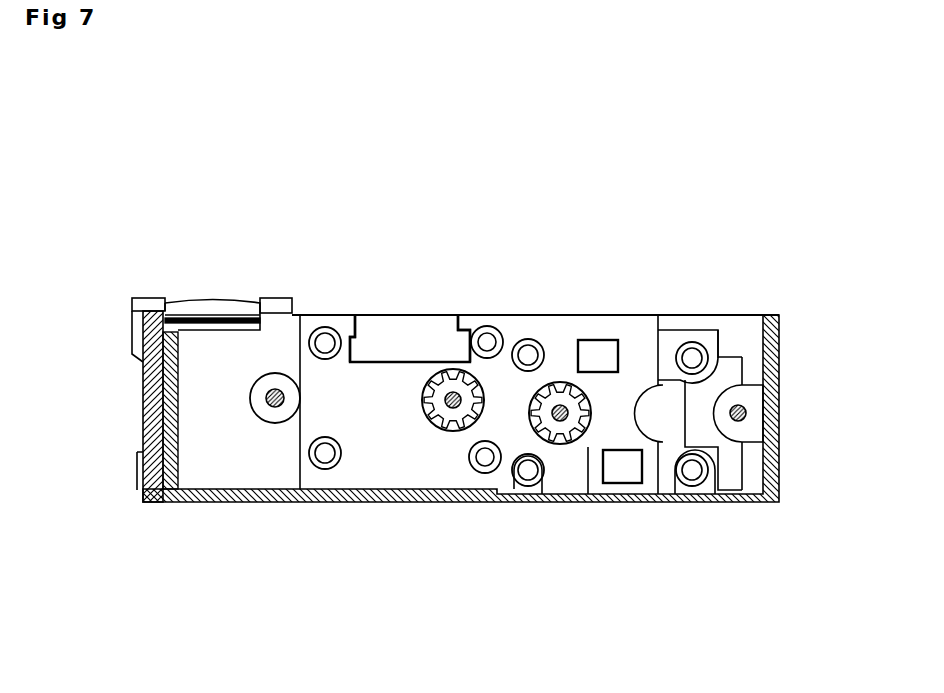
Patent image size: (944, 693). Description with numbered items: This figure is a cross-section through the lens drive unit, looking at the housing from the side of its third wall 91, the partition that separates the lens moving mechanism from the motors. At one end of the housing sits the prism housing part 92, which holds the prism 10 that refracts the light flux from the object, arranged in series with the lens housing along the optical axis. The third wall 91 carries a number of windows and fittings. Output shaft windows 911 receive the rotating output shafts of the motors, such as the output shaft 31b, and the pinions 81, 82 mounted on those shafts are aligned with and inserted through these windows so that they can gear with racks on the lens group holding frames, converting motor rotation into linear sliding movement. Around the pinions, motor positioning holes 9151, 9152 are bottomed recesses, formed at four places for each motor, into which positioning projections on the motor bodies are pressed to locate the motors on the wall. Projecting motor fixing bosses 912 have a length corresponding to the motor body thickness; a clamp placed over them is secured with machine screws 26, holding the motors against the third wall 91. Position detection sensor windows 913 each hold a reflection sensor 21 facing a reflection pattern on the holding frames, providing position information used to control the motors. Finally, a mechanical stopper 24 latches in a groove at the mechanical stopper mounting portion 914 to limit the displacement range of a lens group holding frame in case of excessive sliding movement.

The prism 10 is at (215, 300).
The prism housing part 92 is at (132, 306).
The third wall 91 is at (746, 322).
The machine screw 26 is at (268, 410).
The motor fixing boss 912 is at (262, 398).
The motor positioning hole 9151 is at (323, 330).
The motor positioning hole 9152 is at (517, 342).
The mechanical stopper 24 is at (372, 328).
The mechanical stopper mounting portion 914 is at (352, 315).
The pinion 81 is at (453, 369).
The pinion 82 is at (566, 382).
The output shaft 31b is at (556, 383).
The output shaft window 911 is at (453, 432).
The reflection sensor 21 is at (611, 347).
The position detection sensor window 913 is at (619, 348).